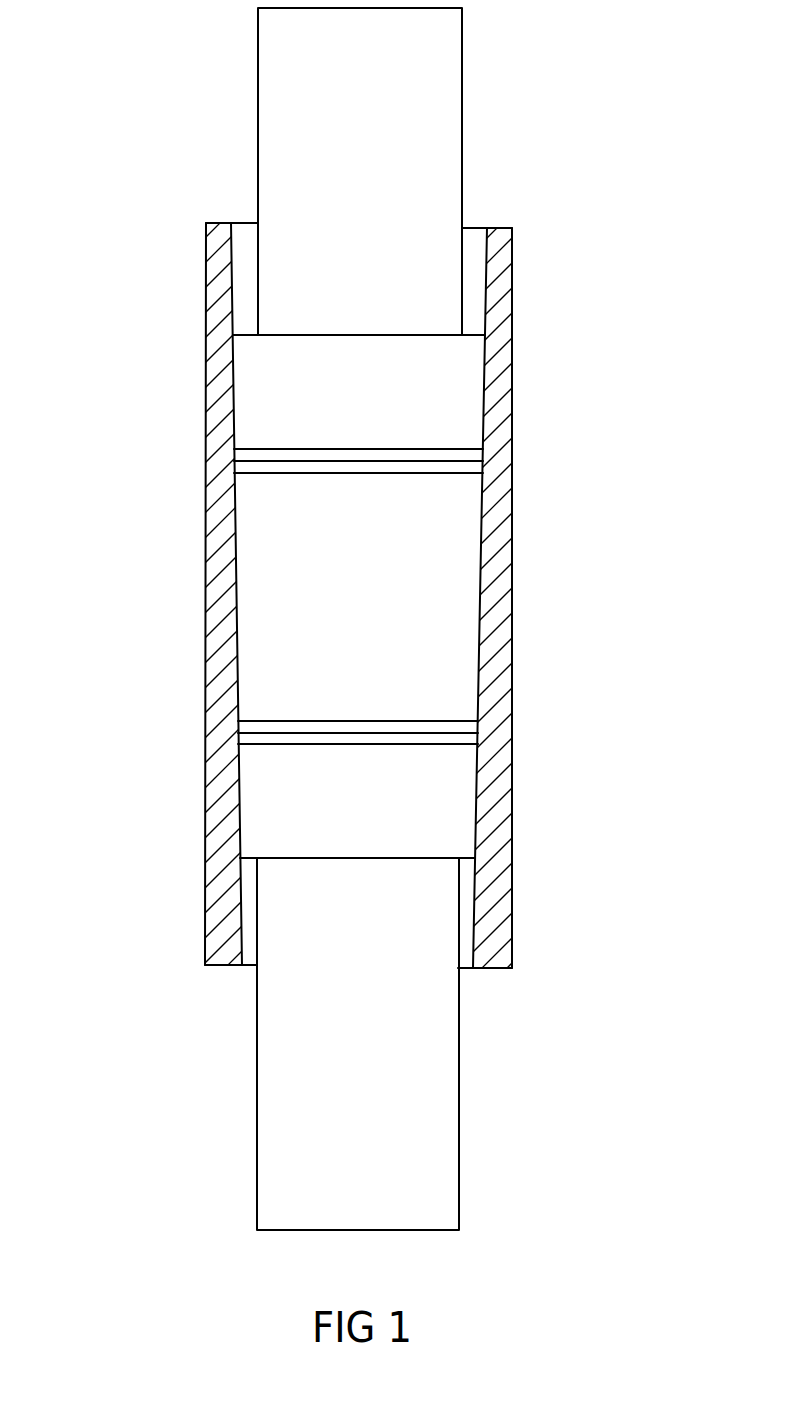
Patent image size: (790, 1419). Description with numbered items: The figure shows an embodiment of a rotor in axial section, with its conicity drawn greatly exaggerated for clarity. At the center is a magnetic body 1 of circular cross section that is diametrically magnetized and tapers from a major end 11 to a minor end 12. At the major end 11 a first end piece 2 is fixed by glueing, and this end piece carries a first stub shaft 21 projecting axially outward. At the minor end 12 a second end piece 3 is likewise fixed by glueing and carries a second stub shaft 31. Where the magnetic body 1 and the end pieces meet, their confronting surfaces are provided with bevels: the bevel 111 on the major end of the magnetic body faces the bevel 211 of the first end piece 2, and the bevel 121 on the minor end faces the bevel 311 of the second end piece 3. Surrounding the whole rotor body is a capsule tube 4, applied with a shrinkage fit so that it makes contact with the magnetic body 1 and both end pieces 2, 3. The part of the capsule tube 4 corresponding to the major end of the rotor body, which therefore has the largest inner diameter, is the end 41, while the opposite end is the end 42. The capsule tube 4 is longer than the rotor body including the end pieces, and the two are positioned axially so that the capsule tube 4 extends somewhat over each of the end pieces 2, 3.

The magnetic body 1 is at (358, 585).
The major end 11 is at (425, 487).
The bevel 111 is at (257, 461).
The minor end 12 is at (423, 710).
The bevel 121 is at (257, 733).
The first end piece 2 is at (422, 400).
The first stub shaft 21 is at (423, 67).
The bevel 211 is at (257, 461).
The second end piece 3 is at (420, 805).
The second stub shaft 31 is at (422, 1106).
The bevel 311 is at (257, 733).
The capsule tube 4 is at (205, 590).
The capsule tube major end part 41 is at (512, 248).
The capsule tube other end 42 is at (512, 927).